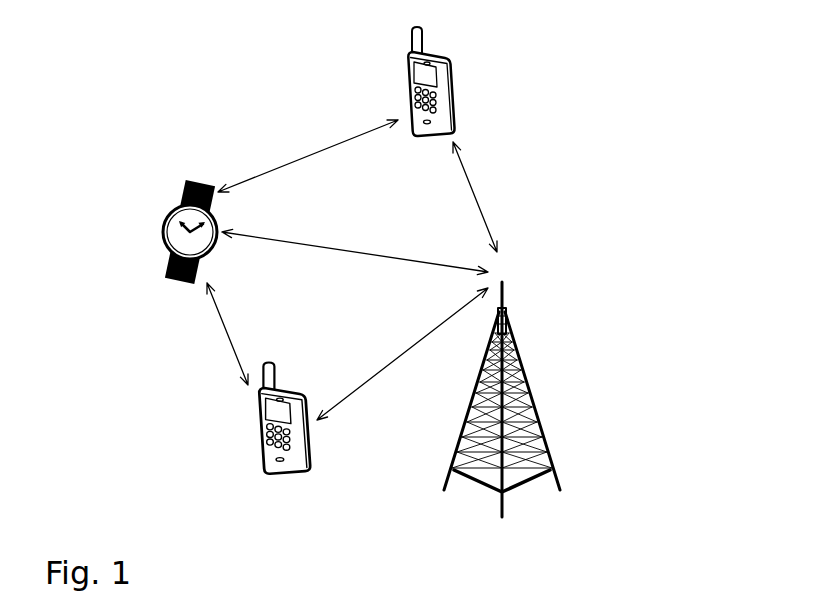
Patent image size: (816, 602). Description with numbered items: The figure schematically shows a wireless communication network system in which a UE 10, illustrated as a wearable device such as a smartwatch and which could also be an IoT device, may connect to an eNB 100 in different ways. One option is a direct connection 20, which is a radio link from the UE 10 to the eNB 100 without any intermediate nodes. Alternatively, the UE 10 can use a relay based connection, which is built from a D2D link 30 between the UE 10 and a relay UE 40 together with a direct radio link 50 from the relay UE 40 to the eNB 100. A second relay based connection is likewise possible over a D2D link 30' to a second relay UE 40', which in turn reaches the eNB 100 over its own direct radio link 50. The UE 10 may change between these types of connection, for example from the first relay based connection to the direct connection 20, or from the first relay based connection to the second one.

The UE 10 is at (168, 215).
The direct connection 20 is at (350, 247).
The D2D link 30 is at (207, 334).
The D2D link 30' is at (308, 152).
The relay UE 40 is at (309, 436).
The relay UE 40' is at (401, 81).
The direct radio link 50 is at (482, 190).
The eNB 100 is at (477, 487).